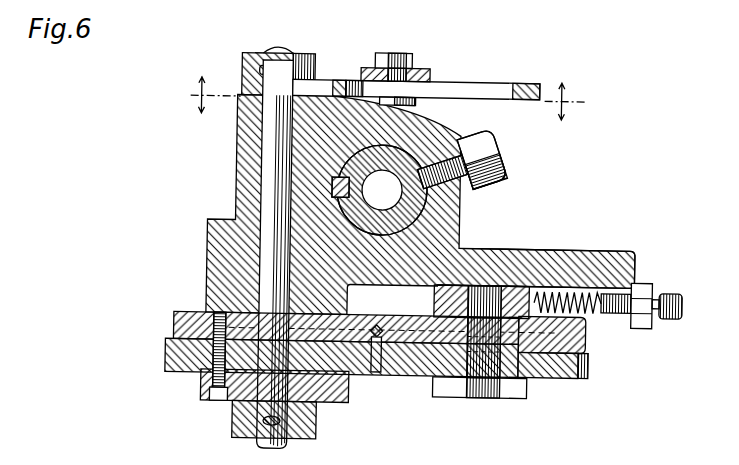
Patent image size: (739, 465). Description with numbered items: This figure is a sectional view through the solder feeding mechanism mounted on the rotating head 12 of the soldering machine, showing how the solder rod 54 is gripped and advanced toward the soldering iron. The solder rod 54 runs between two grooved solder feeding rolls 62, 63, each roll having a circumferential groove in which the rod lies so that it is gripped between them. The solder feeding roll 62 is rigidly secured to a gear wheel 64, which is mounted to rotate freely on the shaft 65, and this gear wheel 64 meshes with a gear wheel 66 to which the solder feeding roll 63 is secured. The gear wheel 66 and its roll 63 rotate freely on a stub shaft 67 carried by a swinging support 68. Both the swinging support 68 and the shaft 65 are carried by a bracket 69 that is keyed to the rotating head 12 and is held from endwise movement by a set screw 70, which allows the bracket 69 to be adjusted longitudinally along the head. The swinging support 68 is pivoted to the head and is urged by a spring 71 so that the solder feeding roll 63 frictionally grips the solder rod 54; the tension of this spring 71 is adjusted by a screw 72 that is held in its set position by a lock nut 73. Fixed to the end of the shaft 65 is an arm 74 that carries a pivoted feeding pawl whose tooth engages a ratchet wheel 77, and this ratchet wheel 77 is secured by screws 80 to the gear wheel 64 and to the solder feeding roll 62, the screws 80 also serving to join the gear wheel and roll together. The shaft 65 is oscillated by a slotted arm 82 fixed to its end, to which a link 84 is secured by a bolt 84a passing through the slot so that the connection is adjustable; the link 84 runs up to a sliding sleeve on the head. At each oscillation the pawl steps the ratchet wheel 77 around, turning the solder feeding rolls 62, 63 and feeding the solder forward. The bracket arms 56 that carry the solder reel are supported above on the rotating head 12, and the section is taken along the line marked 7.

The section line 7- 7 is at (388, 98).
The rotating head 12 is at (397, 160).
The solder rod 54 is at (412, 377).
The bracket arms 56 is at (421, 275).
The solder feeding roll 62 is at (377, 326).
The solder feeding roll 63 is at (410, 387).
The gear wheel 64 is at (182, 356).
The shaft 65 is at (268, 184).
The gear wheel 66 is at (558, 377).
The stub shaft 67 is at (498, 291).
The swinging support 68 is at (525, 289).
The bracket 69 is at (440, 232).
The set screw 70 is at (480, 146).
The spring 71 is at (573, 312).
The screw 72 is at (633, 284).
The lock nut 73 is at (653, 280).
The arm 74 is at (281, 405).
The ratchet wheel 77 is at (207, 390).
The screws 80 is at (217, 404).
The arm 82 is at (483, 91).
The link 84 is at (425, 69).
The bolt 84a is at (392, 53).